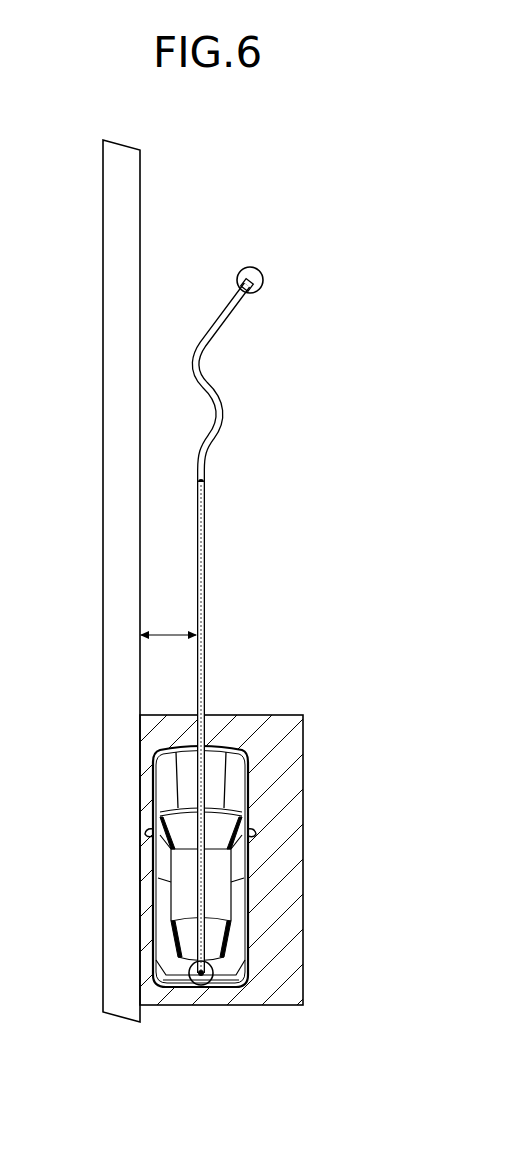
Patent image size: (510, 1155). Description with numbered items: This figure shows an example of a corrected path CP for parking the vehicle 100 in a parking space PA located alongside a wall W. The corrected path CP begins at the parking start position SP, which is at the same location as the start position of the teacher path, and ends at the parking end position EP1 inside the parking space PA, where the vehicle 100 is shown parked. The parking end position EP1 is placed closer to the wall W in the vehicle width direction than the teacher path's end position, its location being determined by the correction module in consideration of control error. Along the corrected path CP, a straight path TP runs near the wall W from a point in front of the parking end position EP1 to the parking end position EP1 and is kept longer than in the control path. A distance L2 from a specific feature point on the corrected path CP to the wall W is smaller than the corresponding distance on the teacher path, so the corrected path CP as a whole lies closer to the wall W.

The wall W is at (110, 497).
The parking space PA is at (283, 752).
The vehicle 100 is at (217, 897).
The corrected path CP is at (218, 397).
The straight path TP is at (203, 667).
The parking start position SP is at (263, 278).
The parking end position EP1 is at (213, 970).
The distance L2 is at (168, 624).